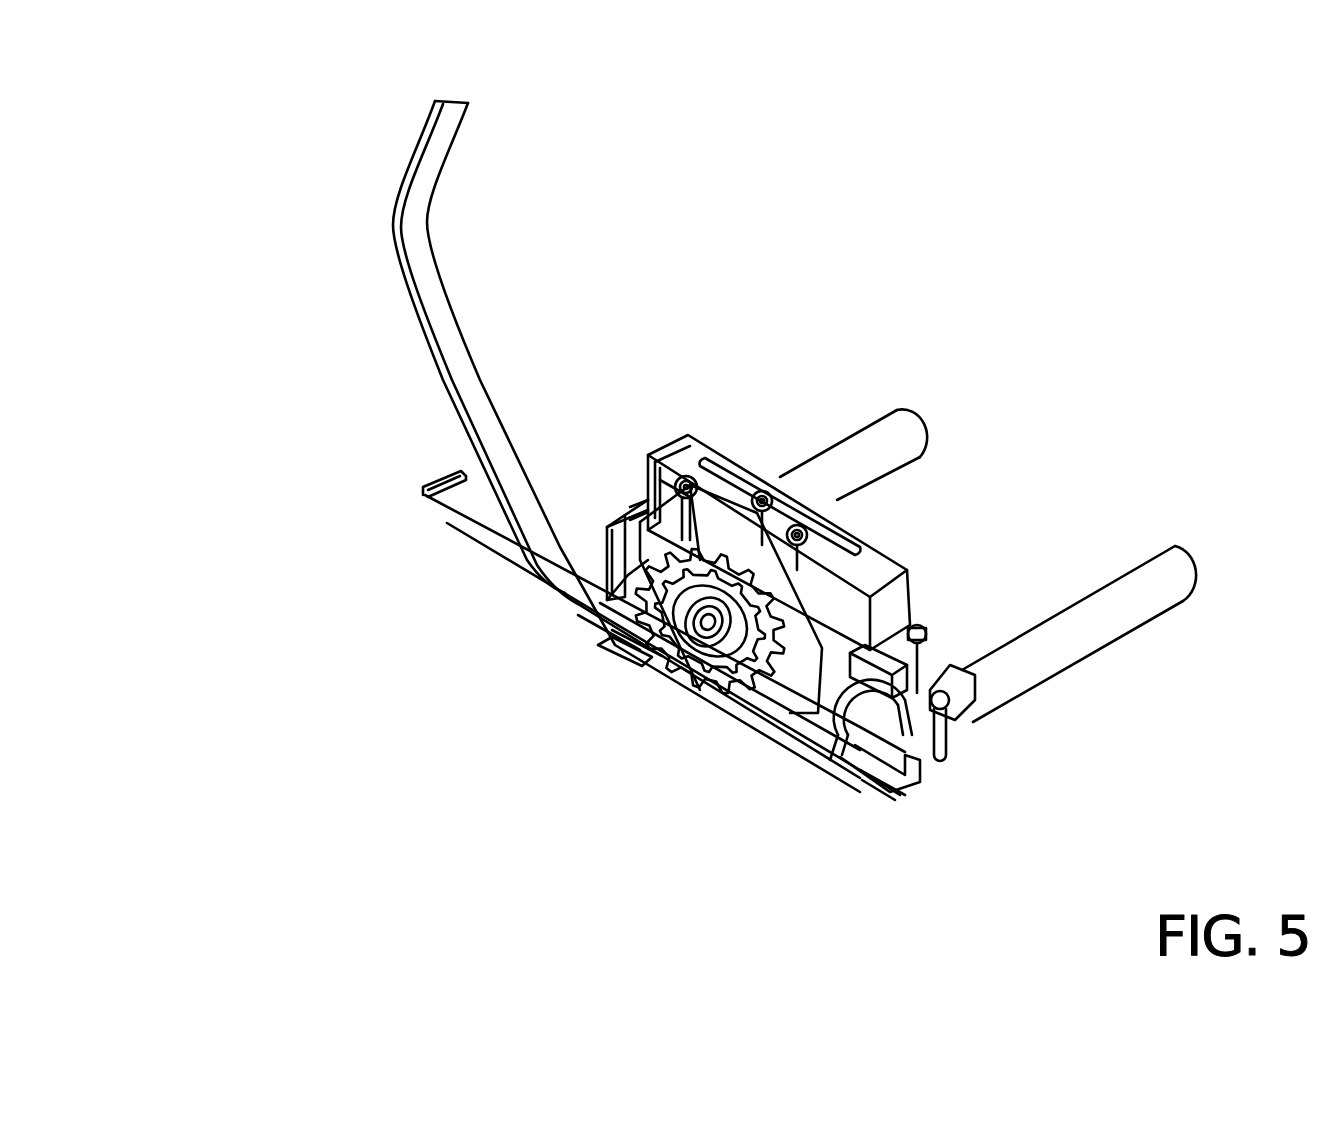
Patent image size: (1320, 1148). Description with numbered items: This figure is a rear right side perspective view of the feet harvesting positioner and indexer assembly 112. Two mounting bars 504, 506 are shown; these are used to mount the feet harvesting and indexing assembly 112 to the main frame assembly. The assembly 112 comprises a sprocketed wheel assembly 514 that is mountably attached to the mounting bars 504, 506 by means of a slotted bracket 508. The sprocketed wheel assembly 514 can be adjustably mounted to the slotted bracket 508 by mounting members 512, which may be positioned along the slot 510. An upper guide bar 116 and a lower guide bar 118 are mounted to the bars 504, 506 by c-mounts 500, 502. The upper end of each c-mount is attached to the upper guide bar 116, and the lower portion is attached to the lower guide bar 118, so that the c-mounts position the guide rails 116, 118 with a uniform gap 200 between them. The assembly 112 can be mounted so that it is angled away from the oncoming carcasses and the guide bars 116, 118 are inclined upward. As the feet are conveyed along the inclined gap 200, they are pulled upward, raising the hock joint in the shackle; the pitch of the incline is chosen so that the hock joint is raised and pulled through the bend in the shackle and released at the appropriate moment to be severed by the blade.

The feet harvesting positioner and indexer assembly 112 is at (833, 197).
The upper guide bar 116 is at (430, 257).
The lower guide bar 118 is at (447, 523).
The uniform gap 200 is at (567, 590).
The c-mount 500 is at (606, 650).
The c-mount 502 is at (818, 752).
The mounting bar 504 is at (1130, 585).
The mounting bar 506 is at (902, 432).
The slotted bracket 508 is at (877, 573).
The slot 510 is at (722, 480).
The mounting members 512 is at (768, 487).
The sprocketed wheel assembly 514 is at (613, 527).